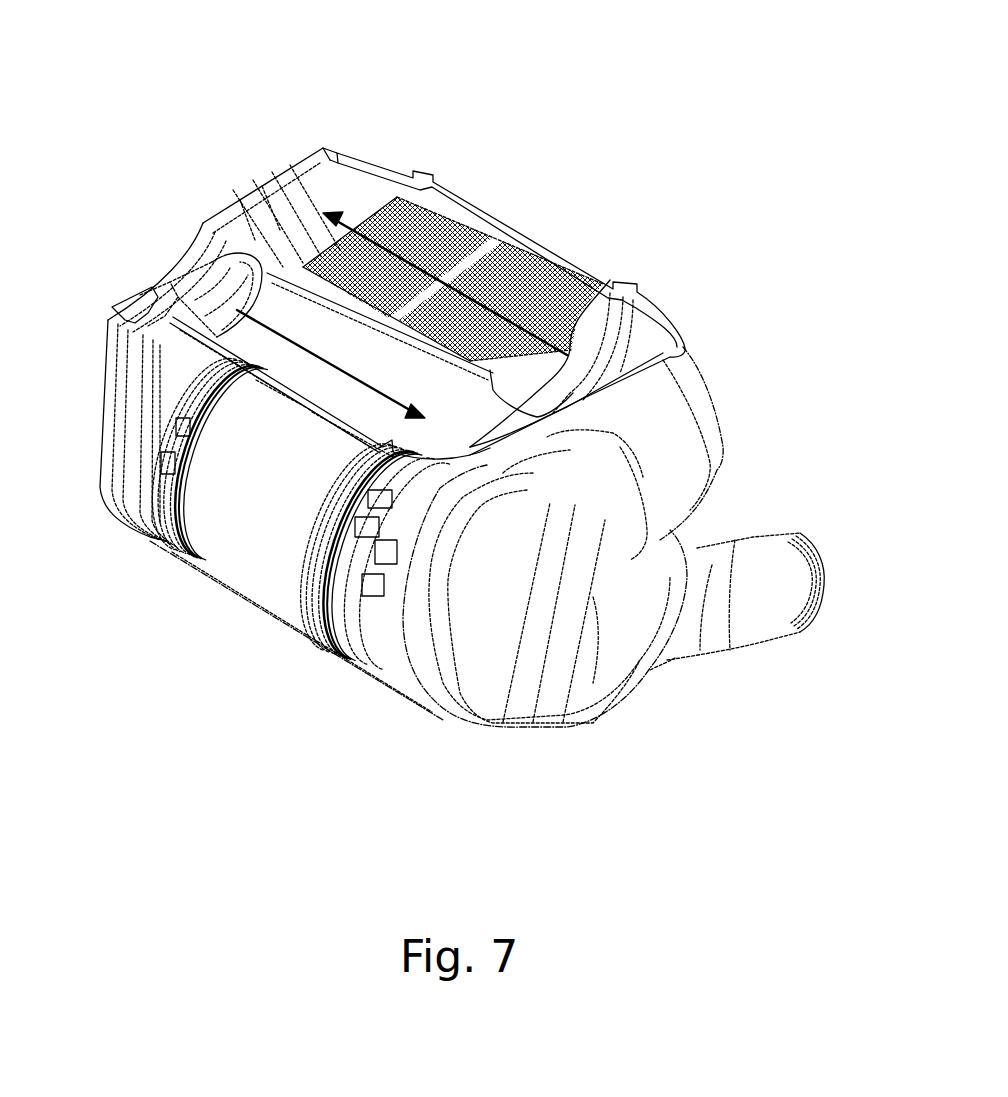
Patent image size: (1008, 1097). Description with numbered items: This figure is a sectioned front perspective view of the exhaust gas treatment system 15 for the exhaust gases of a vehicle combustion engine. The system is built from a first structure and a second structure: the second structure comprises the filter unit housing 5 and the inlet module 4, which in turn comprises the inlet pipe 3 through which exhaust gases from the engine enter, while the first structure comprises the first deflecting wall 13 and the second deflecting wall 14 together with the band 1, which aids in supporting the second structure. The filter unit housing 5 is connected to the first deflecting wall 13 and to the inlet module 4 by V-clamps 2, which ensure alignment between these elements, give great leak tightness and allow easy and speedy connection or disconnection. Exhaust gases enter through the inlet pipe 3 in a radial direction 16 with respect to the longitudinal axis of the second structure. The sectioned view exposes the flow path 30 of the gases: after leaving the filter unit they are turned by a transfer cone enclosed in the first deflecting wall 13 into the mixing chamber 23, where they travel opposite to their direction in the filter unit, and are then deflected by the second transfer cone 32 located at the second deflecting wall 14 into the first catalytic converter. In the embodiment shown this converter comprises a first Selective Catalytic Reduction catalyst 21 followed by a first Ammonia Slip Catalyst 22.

The band 1 is at (377, 660).
The V-clamps 2 is at (168, 548).
The inlet pipe 3 is at (735, 610).
The inlet module 4 is at (550, 670).
The filter unit housing 5 is at (277, 580).
The first deflecting wall 13 is at (120, 453).
The second deflecting wall 14 is at (675, 418).
The exhaust gas treatment system 15 is at (241, 159).
The radial direction 16 is at (887, 557).
The first Selective Catalytic Reduction (SCR) catalyst 21 is at (533, 297).
The first Ammonia Slip Catalyst (ASC) 22 is at (442, 237).
The mixing chamber 23 is at (330, 393).
The flow path 30 is at (347, 225).
The second transfer cone 32 is at (580, 312).